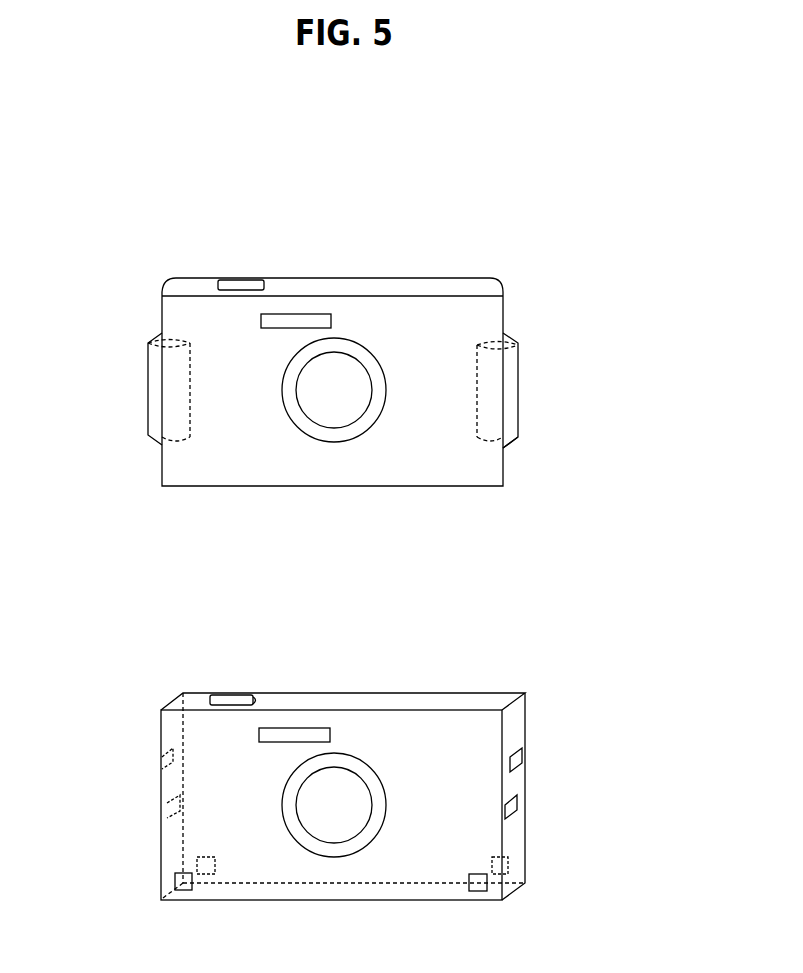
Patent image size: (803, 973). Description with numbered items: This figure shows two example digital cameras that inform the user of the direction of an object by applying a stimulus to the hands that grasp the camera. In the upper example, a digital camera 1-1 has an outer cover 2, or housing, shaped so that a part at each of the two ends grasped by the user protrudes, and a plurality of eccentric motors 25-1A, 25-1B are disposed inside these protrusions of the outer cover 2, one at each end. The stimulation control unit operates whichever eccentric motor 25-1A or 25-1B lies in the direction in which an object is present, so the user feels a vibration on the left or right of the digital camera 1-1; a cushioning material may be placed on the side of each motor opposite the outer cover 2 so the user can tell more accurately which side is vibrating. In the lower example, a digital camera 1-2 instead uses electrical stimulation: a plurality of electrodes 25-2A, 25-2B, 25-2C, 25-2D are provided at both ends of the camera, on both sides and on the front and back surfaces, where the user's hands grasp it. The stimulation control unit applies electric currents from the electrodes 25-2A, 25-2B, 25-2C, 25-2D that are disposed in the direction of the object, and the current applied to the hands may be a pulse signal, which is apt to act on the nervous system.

The digital camera 1-1 is at (450, 278).
The digital camera 1-2 is at (451, 693).
The outer cover (housing) 2 is at (504, 463).
The eccentric motor 25-1A is at (175, 438).
The eccentric motor 25-1B is at (485, 438).
The electrode 25-2A is at (162, 757).
The electrode 25-2B is at (523, 757).
The electrode 25-2C is at (175, 881).
The electrode 25-2D is at (206, 875).